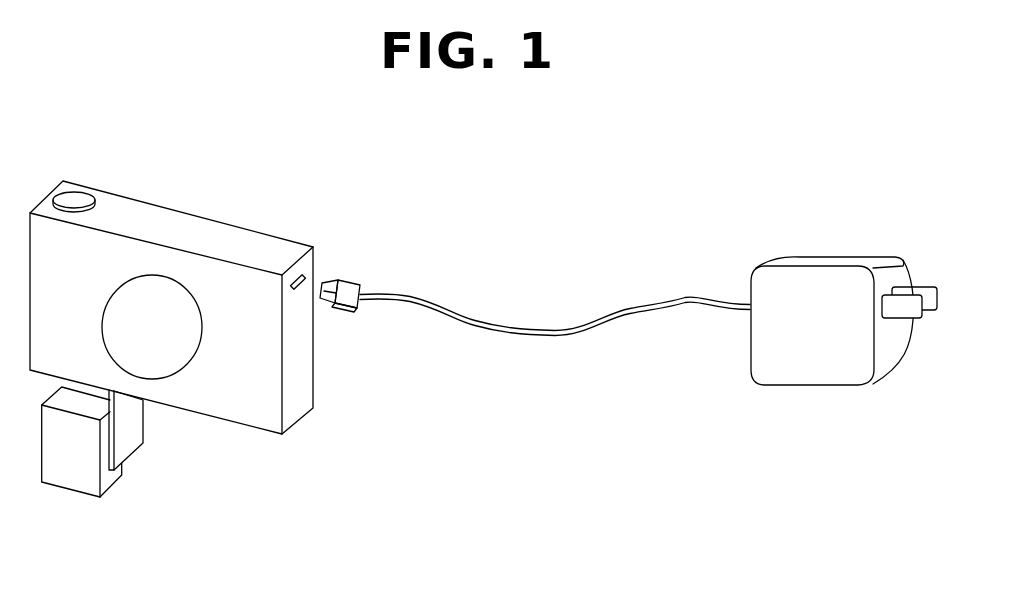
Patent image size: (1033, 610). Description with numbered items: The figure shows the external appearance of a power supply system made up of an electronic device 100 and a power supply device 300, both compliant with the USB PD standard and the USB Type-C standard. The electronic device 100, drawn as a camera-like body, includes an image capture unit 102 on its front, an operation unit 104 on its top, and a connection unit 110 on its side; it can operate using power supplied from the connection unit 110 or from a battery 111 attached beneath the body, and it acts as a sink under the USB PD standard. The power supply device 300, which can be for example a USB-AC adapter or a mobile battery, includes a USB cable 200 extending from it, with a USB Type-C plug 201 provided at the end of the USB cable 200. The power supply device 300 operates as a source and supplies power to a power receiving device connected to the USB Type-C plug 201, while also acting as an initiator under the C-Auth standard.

The electronic device 100 is at (183, 222).
The image capture unit 102 is at (200, 343).
The operation unit 104 is at (73, 198).
The connection unit 110 is at (312, 253).
The battery 111 is at (70, 490).
The USB cable 200 is at (470, 318).
The USB Type-C plug 201 is at (337, 278).
The power supply device 300 is at (840, 260).